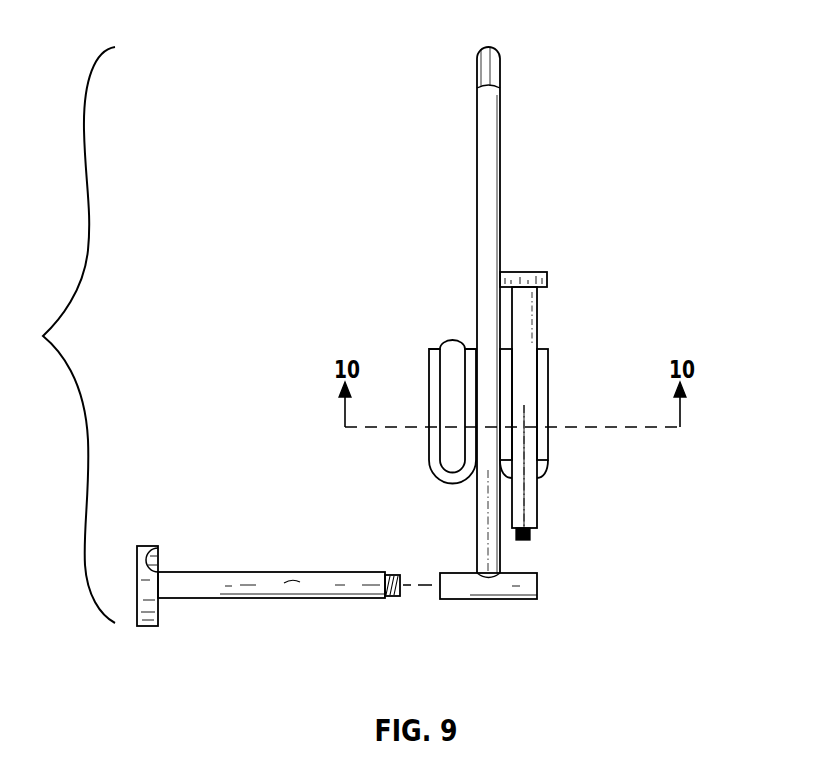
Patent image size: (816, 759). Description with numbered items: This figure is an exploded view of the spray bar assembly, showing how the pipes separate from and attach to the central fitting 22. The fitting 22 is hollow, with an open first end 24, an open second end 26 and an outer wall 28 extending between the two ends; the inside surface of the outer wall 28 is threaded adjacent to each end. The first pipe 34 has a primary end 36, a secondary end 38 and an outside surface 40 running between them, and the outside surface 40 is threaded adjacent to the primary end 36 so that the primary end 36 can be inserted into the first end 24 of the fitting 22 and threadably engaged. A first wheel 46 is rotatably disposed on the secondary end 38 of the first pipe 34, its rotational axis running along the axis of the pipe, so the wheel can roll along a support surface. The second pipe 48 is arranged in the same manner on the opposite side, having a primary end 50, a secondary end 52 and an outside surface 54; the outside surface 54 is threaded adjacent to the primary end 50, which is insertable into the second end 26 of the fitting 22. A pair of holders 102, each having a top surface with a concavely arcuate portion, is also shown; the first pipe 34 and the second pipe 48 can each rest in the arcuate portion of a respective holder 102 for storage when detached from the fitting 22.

The fitting 22 is at (500, 599).
The first end 24 is at (438, 594).
The second end 26 is at (537, 590).
The outer wall 28 is at (463, 582).
The first pipe 34 is at (256, 572).
The primary end 36 is at (393, 575).
The secondary end 38 is at (152, 548).
The outside surface 40 is at (294, 583).
The first wheel 46 is at (148, 627).
The second pipe 48 is at (527, 318).
The primary end 50 is at (530, 540).
The secondary end 52 is at (520, 270).
The outside surface 54 is at (524, 405).
The holders 102 is at (430, 352).